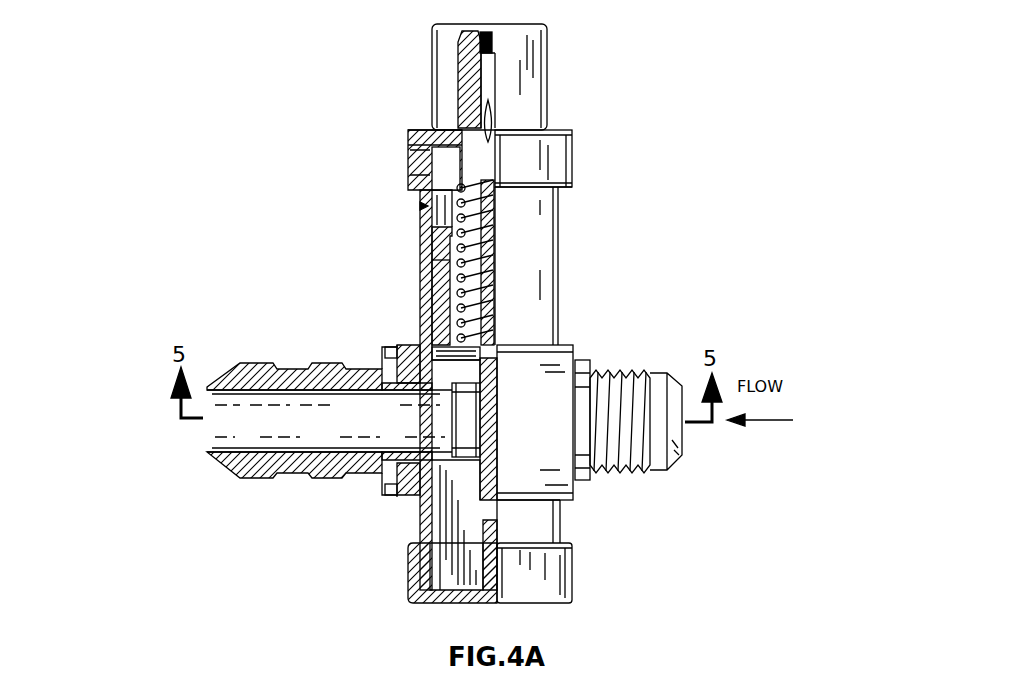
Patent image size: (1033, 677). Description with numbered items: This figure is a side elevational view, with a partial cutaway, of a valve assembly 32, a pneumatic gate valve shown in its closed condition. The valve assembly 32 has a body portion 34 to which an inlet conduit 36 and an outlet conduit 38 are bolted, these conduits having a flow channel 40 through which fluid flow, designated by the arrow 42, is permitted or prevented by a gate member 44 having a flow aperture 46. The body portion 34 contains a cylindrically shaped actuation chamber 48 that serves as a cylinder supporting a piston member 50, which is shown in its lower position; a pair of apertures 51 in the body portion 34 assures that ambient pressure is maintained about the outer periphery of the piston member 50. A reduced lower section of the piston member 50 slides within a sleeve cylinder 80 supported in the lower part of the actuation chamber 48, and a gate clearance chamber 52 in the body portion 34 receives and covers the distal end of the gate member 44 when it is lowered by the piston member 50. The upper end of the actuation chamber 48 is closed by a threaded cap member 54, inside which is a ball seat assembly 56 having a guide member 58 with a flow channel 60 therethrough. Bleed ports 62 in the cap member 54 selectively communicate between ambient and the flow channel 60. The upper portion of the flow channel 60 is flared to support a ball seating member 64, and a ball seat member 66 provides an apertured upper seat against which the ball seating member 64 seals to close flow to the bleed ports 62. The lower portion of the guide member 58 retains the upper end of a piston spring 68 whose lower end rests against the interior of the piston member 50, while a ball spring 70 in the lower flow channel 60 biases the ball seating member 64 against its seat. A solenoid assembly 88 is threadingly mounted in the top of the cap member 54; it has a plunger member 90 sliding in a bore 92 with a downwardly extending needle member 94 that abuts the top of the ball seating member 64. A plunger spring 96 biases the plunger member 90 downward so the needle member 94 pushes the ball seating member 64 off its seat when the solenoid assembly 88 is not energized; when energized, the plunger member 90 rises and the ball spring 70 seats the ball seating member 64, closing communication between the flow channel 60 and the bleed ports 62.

The valve assembly 32 is at (253, 148).
The body portion 34 is at (558, 289).
The inlet conduit 36 is at (632, 367).
The outlet conduit 38 is at (266, 362).
The flow channel 40 is at (238, 424).
The fluid flow arrow 42 is at (760, 411).
The gate member 44 is at (430, 513).
The flow aperture 46 is at (490, 500).
The actuation chamber 48 is at (426, 212).
The piston member 50 is at (420, 224).
The apertures 51 is at (420, 267).
The gate clearance chamber 52 is at (457, 534).
The cap member 54 is at (410, 163).
The ball seat assembly 56 is at (420, 204).
The guide member 58 is at (495, 208).
The flow channel 60 is at (530, 183).
The bleed ports 62 is at (410, 143).
The ball seating member 64 is at (573, 138).
The ball seat member 66 is at (440, 128).
The piston spring 68 is at (490, 258).
The ball spring 70 is at (535, 181).
The sleeve cylinder 80 is at (420, 333).
The solenoid assembly 88 is at (545, 70).
The plunger member 90 is at (489, 75).
The bore 92 is at (462, 70).
The needle member 94 is at (490, 118).
The plunger spring 96 is at (492, 36).